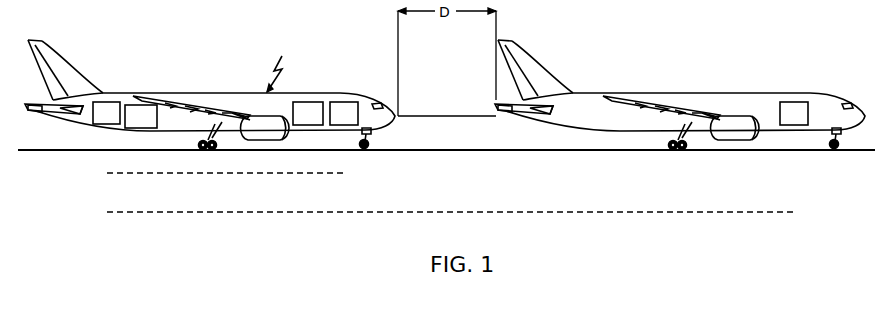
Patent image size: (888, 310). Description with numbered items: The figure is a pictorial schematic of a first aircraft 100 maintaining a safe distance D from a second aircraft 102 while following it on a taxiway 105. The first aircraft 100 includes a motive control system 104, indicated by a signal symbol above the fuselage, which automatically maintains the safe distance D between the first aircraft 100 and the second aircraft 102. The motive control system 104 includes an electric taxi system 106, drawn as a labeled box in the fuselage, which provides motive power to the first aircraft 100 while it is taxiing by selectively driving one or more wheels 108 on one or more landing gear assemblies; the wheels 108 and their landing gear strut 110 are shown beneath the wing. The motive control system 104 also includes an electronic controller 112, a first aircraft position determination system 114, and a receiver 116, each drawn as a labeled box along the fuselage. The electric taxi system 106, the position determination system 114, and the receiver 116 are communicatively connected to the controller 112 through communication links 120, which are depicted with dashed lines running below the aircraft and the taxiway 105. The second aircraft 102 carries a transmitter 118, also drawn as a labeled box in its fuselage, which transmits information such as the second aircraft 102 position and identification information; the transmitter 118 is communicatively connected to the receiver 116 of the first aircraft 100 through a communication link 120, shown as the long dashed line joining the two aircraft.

The first aircraft 100 is at (210, 126).
The second aircraft 102 is at (680, 126).
The motive control system 104 is at (284, 65).
The taxiway 105 is at (519, 151).
The electric taxi system (ETS) 106 is at (141, 173).
The wheels 108 is at (202, 147).
The landing gear strut 110 is at (217, 145).
The electronic controller 112 is at (308, 113).
The first aircraft position determination system 114 is at (345, 173).
The receiver 116 is at (107, 212).
The transmitter 118 is at (795, 212).
The communication links 120 is at (270, 174).